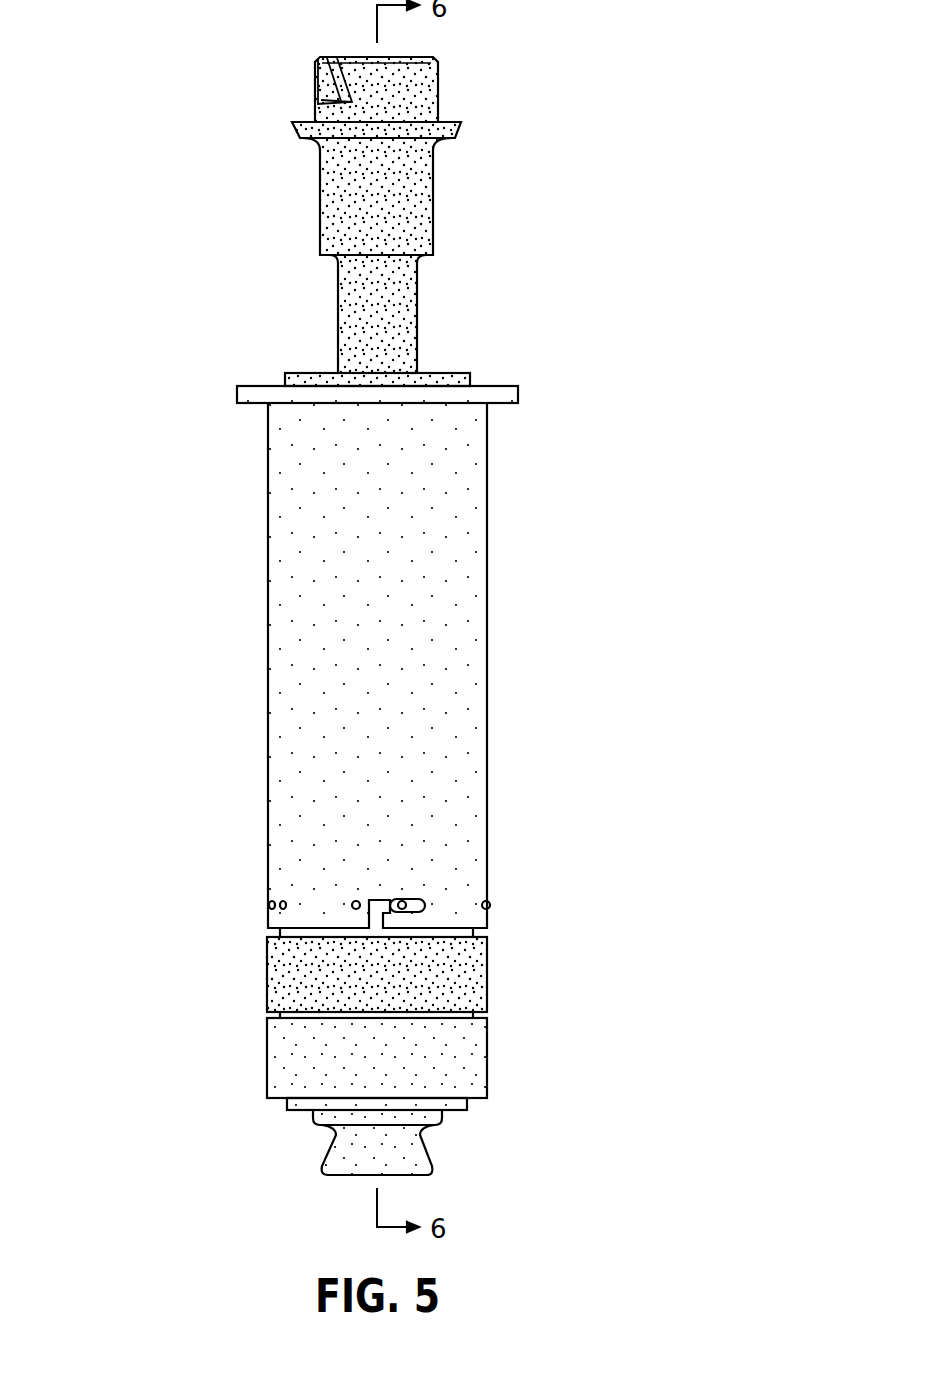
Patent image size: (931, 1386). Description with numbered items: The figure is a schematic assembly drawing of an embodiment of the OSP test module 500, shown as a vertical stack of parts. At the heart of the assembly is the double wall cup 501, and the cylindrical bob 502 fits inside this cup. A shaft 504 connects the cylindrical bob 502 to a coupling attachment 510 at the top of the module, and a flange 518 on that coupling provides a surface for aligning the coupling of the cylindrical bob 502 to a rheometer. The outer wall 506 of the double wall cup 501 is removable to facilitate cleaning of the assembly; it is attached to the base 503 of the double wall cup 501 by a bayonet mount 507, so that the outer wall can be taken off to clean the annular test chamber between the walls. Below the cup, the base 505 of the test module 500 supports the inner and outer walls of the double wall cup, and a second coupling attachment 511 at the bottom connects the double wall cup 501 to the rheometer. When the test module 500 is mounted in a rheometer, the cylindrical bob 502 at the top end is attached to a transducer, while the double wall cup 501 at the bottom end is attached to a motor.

The OSP test module 500 is at (141, 181).
The double wall cup 501 is at (462, 594).
The cylindrical bob 502 is at (449, 372).
The base of the double wall cup 503 is at (462, 978).
The shaft 504 is at (400, 290).
The base of test module 505 is at (462, 1058).
The outer wall 506 is at (453, 494).
The bayonet mount 507 is at (427, 903).
The coupling attachment 510 is at (435, 80).
The coupling attachment 511 is at (405, 1156).
The flange 518 is at (448, 124).